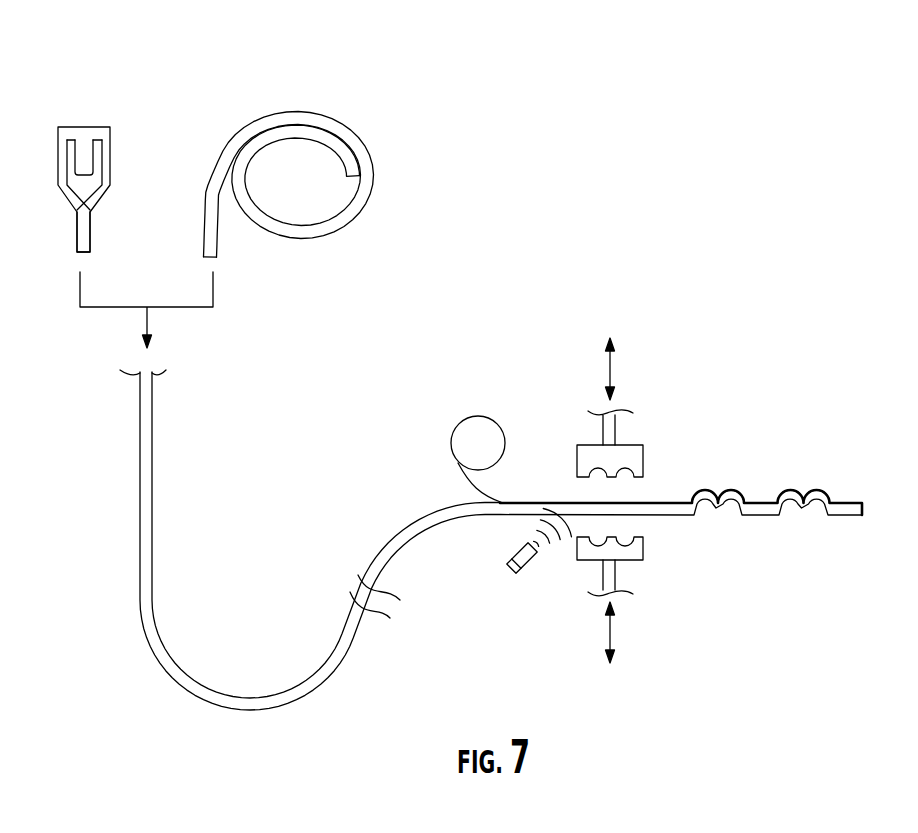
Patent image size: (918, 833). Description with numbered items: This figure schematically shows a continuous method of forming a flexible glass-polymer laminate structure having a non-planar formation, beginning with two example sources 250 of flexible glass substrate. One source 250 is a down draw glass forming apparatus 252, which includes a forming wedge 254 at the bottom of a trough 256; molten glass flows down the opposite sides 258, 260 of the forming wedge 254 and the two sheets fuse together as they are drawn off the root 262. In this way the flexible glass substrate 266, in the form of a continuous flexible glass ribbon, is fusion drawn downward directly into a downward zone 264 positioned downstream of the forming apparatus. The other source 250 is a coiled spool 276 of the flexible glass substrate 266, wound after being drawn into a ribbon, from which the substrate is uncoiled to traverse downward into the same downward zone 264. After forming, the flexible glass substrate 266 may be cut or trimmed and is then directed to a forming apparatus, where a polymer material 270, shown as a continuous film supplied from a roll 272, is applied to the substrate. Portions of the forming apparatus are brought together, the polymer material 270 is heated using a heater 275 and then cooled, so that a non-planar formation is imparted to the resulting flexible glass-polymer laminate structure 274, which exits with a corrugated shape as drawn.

The source of flexible glass substrate 250 is at (390, 64).
The down draw glass forming apparatus 252 is at (142, 100).
The forming wedge 254 is at (88, 196).
The trough 256 is at (79, 147).
The first side of forming wedge 258 is at (80, 191).
The second side of forming wedge 260 is at (97, 197).
The root 262 is at (87, 194).
The downward zone 264 is at (114, 603).
The flexible glass substrate 266 is at (152, 482).
The polymer material 270 is at (468, 482).
The roll 272 is at (480, 430).
The flexible glass-polymer laminate structure 274 is at (811, 466).
The heater 275 is at (510, 570).
The coiled spool 276 is at (398, 183).